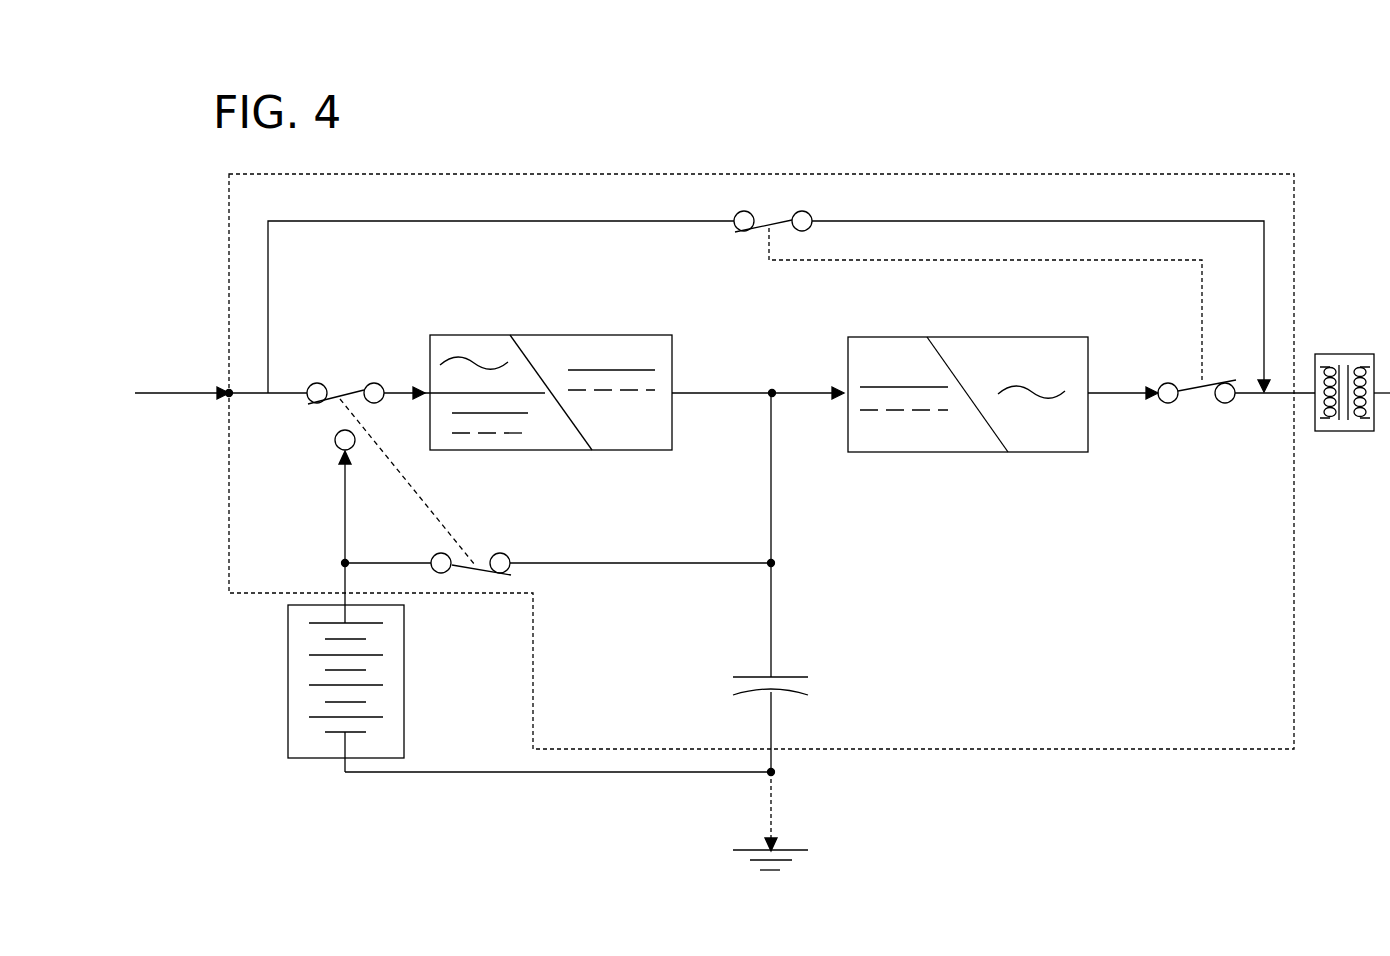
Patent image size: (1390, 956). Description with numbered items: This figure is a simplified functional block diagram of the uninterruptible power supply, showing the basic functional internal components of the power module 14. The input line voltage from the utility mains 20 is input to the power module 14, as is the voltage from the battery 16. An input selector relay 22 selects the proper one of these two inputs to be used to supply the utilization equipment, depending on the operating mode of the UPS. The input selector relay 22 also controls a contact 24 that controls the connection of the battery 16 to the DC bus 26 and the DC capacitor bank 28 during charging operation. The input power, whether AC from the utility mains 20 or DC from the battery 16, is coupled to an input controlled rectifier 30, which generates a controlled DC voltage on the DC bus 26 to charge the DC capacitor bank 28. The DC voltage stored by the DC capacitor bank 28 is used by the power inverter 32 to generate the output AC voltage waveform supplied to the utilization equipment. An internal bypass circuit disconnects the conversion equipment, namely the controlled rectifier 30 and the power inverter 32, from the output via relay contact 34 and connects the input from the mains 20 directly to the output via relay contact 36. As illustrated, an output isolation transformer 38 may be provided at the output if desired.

The power module 14 is at (580, 174).
The battery 16 is at (288, 700).
The utility mains 20 is at (180, 390).
The input selector relay 22 is at (376, 383).
The contact 24 is at (500, 553).
The DC bus 26 is at (772, 392).
The DC capacitor bank 28 is at (788, 677).
The input controlled rectifier 30 is at (592, 335).
The power inverter 32 is at (880, 337).
The relay contact 34 is at (1167, 404).
The relay contact 36 is at (803, 211).
The output isolation transformer 38 is at (1340, 432).